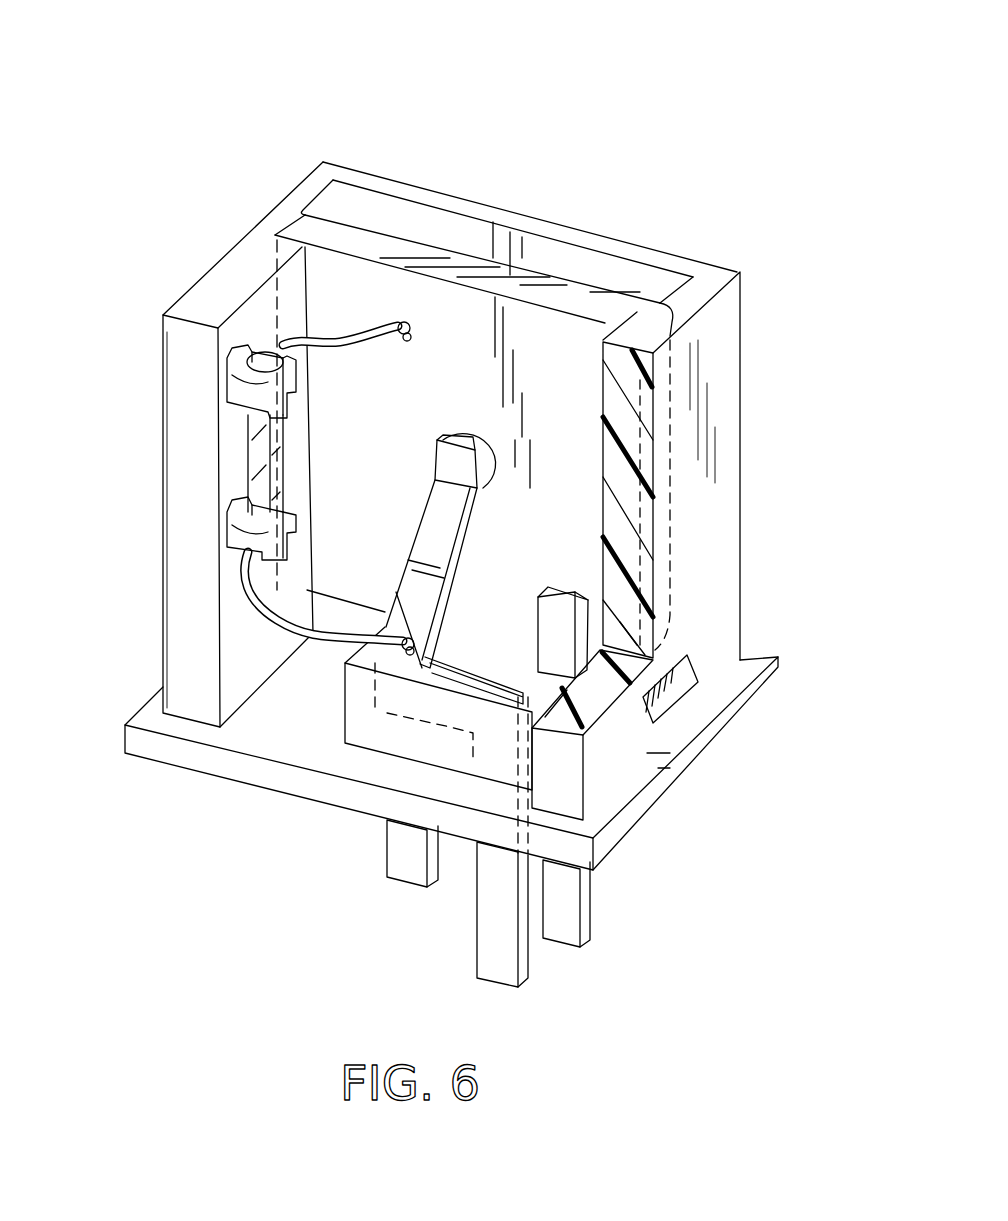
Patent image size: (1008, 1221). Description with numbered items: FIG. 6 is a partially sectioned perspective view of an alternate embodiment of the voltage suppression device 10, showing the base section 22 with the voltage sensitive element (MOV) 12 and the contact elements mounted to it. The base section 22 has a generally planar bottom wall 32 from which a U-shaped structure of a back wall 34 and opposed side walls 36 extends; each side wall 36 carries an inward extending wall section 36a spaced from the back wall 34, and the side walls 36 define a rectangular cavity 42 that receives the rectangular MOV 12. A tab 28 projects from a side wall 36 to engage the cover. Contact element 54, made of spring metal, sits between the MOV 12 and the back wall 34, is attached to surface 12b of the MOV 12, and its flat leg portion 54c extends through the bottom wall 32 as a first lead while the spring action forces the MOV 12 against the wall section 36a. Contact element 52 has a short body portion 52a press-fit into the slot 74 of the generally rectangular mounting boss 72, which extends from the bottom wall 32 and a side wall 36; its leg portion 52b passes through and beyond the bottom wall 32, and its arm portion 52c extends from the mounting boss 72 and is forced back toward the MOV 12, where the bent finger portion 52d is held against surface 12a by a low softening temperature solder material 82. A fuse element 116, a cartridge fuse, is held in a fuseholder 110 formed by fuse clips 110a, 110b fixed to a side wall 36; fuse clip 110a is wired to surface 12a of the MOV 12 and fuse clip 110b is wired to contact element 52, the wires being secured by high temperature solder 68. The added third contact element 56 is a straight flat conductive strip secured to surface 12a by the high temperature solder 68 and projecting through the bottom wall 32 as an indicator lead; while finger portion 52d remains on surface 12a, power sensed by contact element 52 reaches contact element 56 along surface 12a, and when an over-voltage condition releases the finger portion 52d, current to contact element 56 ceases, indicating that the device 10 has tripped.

The voltage suppression device 10 is at (305, 92).
The voltage sensitive element 12 is at (522, 273).
The surface of MOV 12a is at (552, 338).
The surface of MOV 12b is at (440, 246).
The base section 22 is at (742, 486).
The tab 28 is at (675, 697).
The bottom wall portion 32 is at (297, 752).
The back wall 34 is at (510, 218).
The side wall 36 is at (197, 300).
The inward extending wall section 36a is at (287, 240).
The cavity 42 is at (420, 222).
The contact element 52 is at (468, 541).
The body portion 52a is at (417, 717).
The leg portion 52b is at (490, 947).
The arm portion 52c is at (430, 534).
The finger portion 52d is at (447, 460).
The contact element 54 is at (412, 884).
The leg portion 54c is at (397, 858).
The contact element 56 is at (562, 632).
The high temperature solder 68 is at (401, 322).
The mounting boss 72 is at (357, 717).
The slot 74 is at (463, 672).
The solder material 82 is at (474, 444).
The fuseholder 110 is at (217, 372).
The fuse clip 110a is at (232, 385).
The fuse clip 110b is at (230, 537).
The fuse element 116 is at (247, 456).